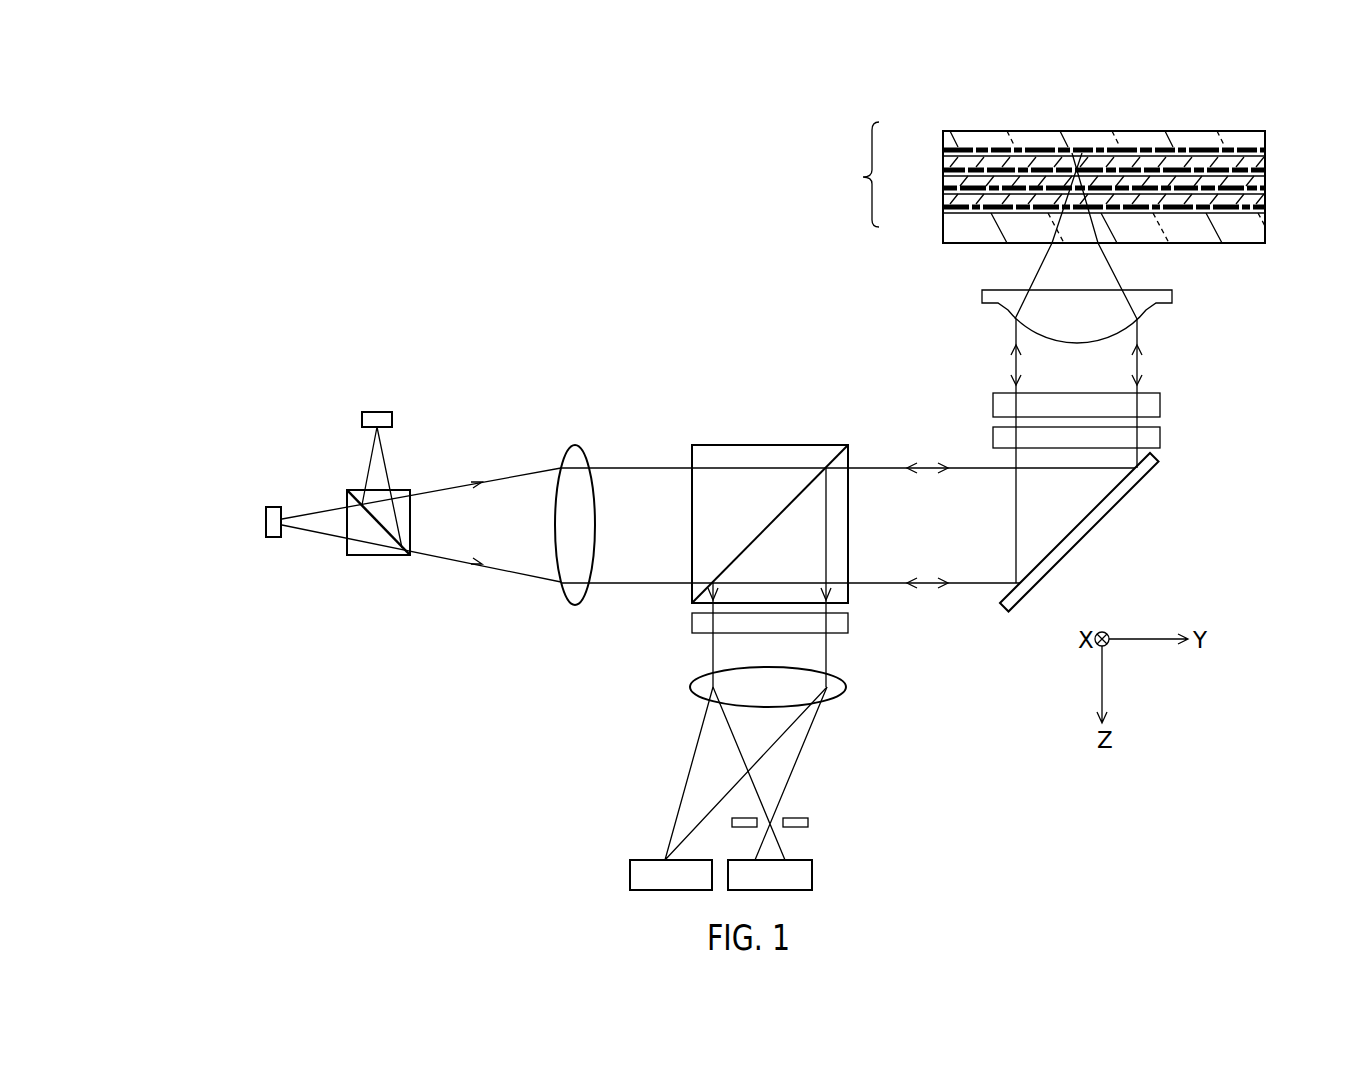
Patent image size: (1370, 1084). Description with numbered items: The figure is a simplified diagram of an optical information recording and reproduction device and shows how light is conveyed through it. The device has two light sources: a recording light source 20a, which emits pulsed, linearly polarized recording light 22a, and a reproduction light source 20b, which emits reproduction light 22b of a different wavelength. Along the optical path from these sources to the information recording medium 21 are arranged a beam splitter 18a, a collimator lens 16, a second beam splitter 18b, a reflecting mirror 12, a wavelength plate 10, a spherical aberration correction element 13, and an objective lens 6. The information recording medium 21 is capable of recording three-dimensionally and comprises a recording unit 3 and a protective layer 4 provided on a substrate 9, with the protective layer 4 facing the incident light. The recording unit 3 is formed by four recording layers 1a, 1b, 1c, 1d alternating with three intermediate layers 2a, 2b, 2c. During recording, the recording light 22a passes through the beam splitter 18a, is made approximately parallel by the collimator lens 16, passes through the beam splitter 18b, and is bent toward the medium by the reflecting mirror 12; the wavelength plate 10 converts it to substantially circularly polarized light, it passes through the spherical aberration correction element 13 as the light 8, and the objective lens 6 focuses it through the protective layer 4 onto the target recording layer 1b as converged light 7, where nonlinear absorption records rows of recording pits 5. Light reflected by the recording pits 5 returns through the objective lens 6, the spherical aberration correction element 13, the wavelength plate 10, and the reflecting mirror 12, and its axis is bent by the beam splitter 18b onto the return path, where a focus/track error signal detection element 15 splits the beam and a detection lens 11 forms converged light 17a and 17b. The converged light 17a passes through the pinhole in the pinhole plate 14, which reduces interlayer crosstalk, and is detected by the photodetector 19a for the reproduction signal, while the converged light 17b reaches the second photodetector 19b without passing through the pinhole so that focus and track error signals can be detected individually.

The information recording medium 21 is at (1254, 128).
The substrate 9 is at (950, 138).
The protective layer 4 is at (950, 228).
The recording unit 3 is at (863, 174).
The recording layer 1a is at (943, 150).
The recording layer 1b is at (943, 170).
The recording layer 1c is at (943, 188).
The recording layer 1d is at (943, 207).
The intermediate layer 2a is at (1265, 161).
The intermediate layer 2b is at (1265, 180).
The intermediate layer 2c is at (1265, 199).
The recording pits 5 is at (1077, 160).
The converged light 7 is at (1045, 270).
The objective lens 6 is at (1005, 312).
The light 8 is at (1145, 362).
The spherical aberration correction element 13 is at (1160, 405).
The wavelength plate 10 is at (1160, 437).
The reflecting mirror 12 is at (1084, 535).
The beam splitter 18b is at (760, 480).
The collimator lens 16 is at (575, 447).
The focus/track error signal detection element 15 is at (848, 622).
The detection lens 11 is at (848, 687).
The converged light 17a is at (800, 747).
The converged light 17b is at (697, 763).
The pinhole plate 14 is at (808, 822).
The photodetector 19a is at (812, 877).
The photodetector 19b is at (630, 877).
The recording light source 20a is at (266, 522).
The reproduction light source 20b is at (392, 419).
The recording light 22a is at (322, 520).
The reproduction light 22b is at (373, 465).
The beam splitter 18a is at (398, 490).